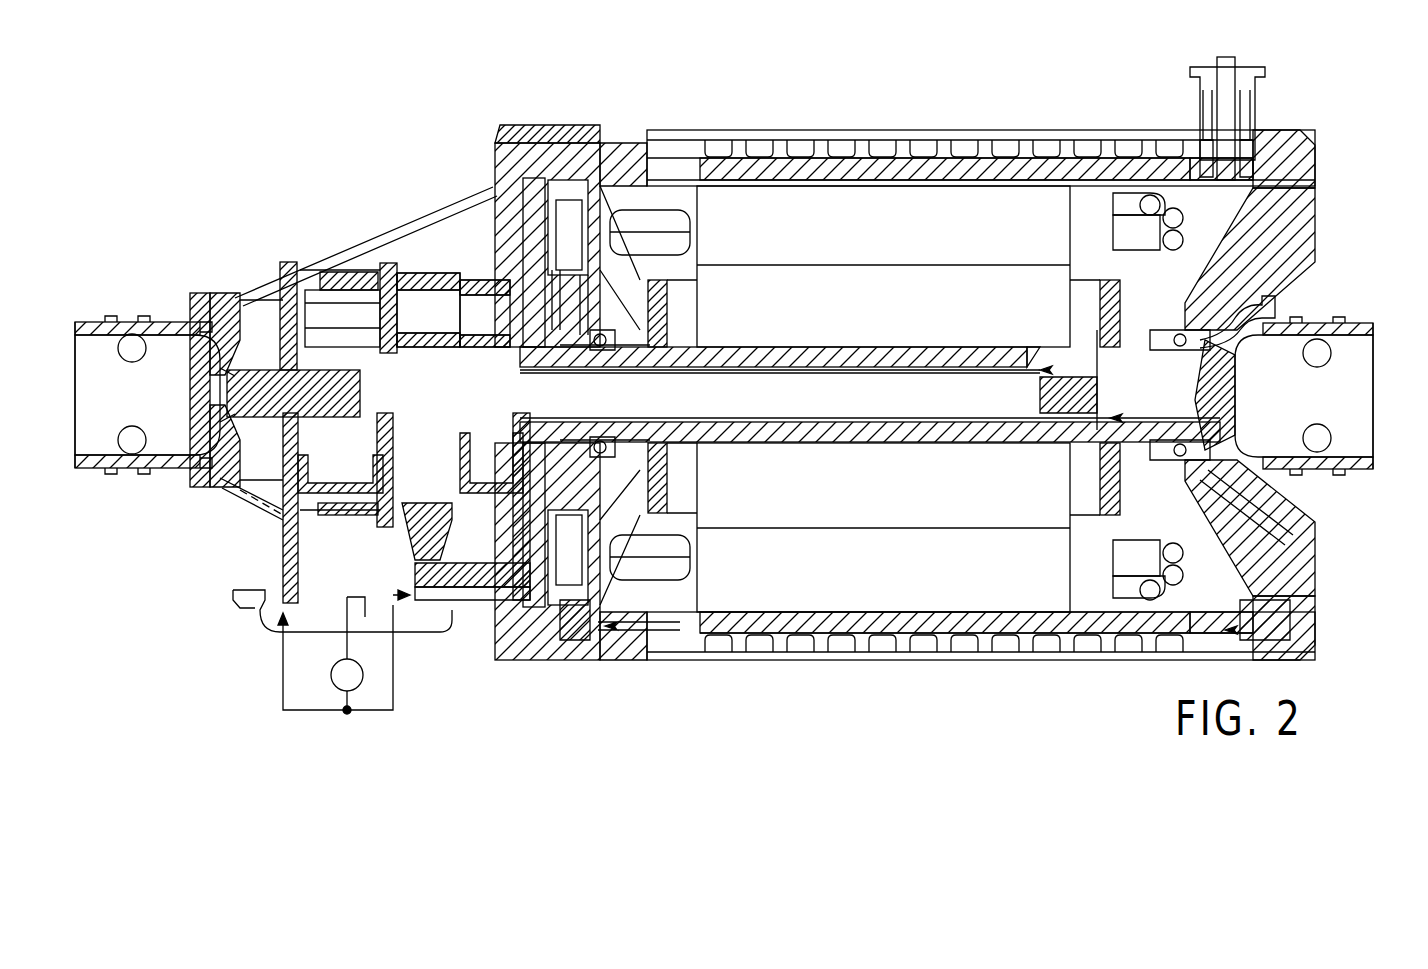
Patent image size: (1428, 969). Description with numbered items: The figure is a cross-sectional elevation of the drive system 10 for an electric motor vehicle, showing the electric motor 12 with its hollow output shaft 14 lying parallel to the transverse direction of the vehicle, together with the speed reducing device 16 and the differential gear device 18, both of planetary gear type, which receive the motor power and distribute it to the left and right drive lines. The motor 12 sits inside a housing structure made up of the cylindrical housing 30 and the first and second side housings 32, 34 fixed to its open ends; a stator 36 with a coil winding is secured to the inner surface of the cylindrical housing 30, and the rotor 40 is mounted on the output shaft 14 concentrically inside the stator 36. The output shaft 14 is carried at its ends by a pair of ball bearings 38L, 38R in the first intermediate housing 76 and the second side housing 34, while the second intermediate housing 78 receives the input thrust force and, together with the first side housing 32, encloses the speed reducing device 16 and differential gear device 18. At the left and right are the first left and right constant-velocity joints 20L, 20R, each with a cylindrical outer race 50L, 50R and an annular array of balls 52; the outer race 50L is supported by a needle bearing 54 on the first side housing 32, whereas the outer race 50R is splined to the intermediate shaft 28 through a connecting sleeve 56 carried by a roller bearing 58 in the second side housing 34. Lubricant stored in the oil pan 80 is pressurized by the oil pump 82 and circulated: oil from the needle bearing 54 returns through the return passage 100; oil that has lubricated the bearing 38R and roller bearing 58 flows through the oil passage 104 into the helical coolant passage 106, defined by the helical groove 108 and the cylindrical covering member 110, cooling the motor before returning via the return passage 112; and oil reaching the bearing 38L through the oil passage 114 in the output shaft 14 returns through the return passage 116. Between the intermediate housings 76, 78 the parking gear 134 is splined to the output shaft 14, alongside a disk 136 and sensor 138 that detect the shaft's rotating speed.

The drive system 10 is at (346, 70).
The electric motor 12 is at (1055, 96).
The output shaft 14 is at (917, 353).
The speed reducing device 16 is at (408, 190).
The differential gear device 18 is at (334, 233).
The first left constant-velocity joint 20L is at (163, 305).
The first right constant-velocity joint 20R is at (1355, 305).
The intermediate shaft 28 is at (765, 390).
The cylindrical housing 30 is at (865, 140).
The first side housing 32 is at (495, 190).
The second side housing 34 is at (1305, 200).
The stator 36 is at (775, 210).
The ball bearing 38L is at (610, 335).
The ball bearing 38R is at (1175, 300).
The rotor 40 is at (968, 290).
The outer race 50L is at (153, 480).
The outer race 50R is at (1290, 478).
The balls 52 is at (137, 428).
The needle bearing 54 is at (246, 345).
The connecting sleeve 56 is at (1222, 378).
The roller bearing 58 is at (1272, 312).
The first intermediate housing 76 is at (577, 643).
The second intermediate housing 78 is at (538, 300).
The oil pan 80 is at (413, 633).
The oil pump 82 is at (340, 703).
The return passage 100 is at (262, 520).
The oil passage 104 is at (1280, 545).
The helical coolant passage 106 is at (1104, 645).
The helical groove 108 is at (990, 645).
The cylindrical covering member 110 is at (900, 645).
The return passage 112 is at (537, 640).
The oil passage 114 is at (622, 346).
The return passage 116 is at (587, 470).
The parking gear 134 is at (510, 520).
The disk 136 is at (585, 310).
The sensor 138 is at (565, 300).